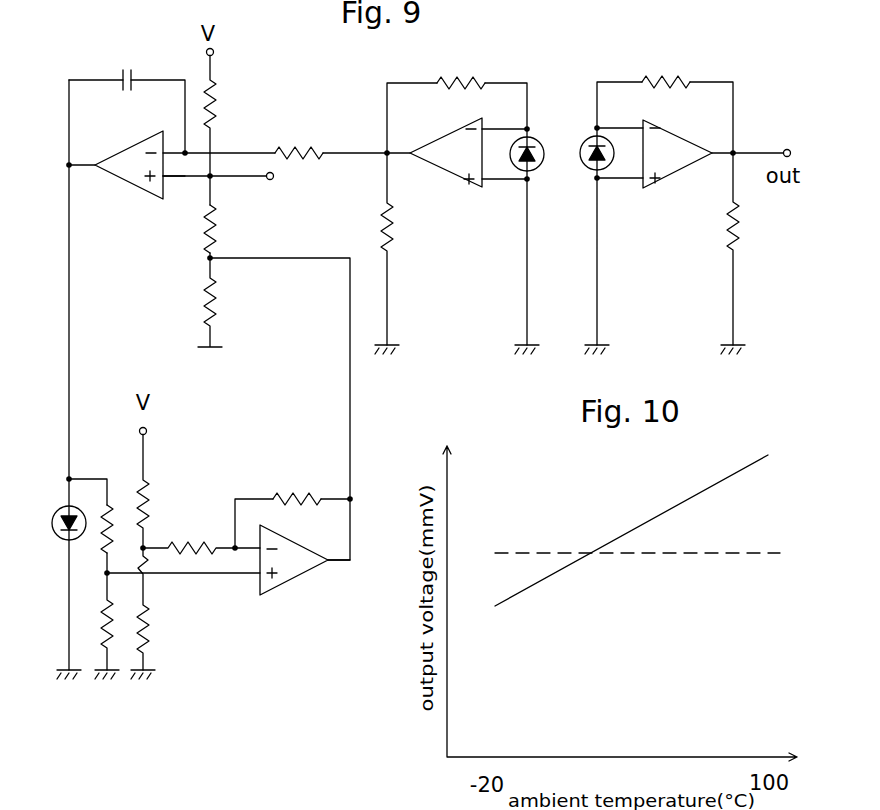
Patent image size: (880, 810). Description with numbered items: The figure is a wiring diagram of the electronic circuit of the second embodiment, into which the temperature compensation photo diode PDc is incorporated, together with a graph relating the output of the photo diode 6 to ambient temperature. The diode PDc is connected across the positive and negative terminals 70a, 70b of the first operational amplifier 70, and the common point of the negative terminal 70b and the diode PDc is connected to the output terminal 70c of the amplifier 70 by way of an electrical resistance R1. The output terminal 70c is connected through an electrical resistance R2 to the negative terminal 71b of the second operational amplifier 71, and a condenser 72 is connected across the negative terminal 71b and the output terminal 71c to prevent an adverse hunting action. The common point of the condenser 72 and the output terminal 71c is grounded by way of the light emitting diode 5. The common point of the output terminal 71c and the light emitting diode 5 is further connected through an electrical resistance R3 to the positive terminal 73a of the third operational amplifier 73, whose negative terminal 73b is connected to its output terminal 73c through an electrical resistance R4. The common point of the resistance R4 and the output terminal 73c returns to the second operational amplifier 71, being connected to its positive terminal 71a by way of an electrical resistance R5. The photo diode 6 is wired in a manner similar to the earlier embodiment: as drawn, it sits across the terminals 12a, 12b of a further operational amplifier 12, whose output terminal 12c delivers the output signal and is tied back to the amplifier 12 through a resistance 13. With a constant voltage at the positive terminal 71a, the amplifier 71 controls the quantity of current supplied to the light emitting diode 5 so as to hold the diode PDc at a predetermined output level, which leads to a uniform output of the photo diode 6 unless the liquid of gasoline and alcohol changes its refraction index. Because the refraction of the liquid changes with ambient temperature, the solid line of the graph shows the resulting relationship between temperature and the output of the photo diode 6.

The condenser 72 is at (134, 74).
The second operational amplifier 71 is at (134, 190).
The positive terminal of second amplifier 71a is at (166, 200).
The negative terminal of second amplifier 71b is at (165, 131).
The output terminal of second amplifier 71c is at (94, 168).
The electrical resistance R5 is at (216, 229).
The electrical resistance R2 is at (299, 148).
The electrical resistance R1 is at (456, 80).
The first operational amplifier 70 is at (448, 186).
The positive terminal of first amplifier 70a is at (485, 194).
The negative terminal of first amplifier 70b is at (486, 127).
The output terminal of first amplifier 70c is at (411, 158).
The temperature compensation photo diode PDc is at (536, 136).
The feedback resistor 13 is at (658, 78).
The operational amplifier 12 is at (690, 170).
The non-inverting input terminal of amplifier 12 12a is at (639, 188).
The inverting input terminal of amplifier 12 12b is at (640, 125).
The output terminal of amplifier 12 12c is at (711, 149).
The photo diode 6 is at (583, 164).
The electrical resistance R4 is at (294, 496).
The third operational amplifier 73 is at (290, 584).
The positive terminal of third amplifier 73a is at (257, 577).
The negative terminal of third amplifier 73b is at (262, 528).
The output terminal of third amplifier 73c is at (330, 565).
The electrical resistance R3 is at (105, 542).
The light emitting diode 5 is at (53, 539).